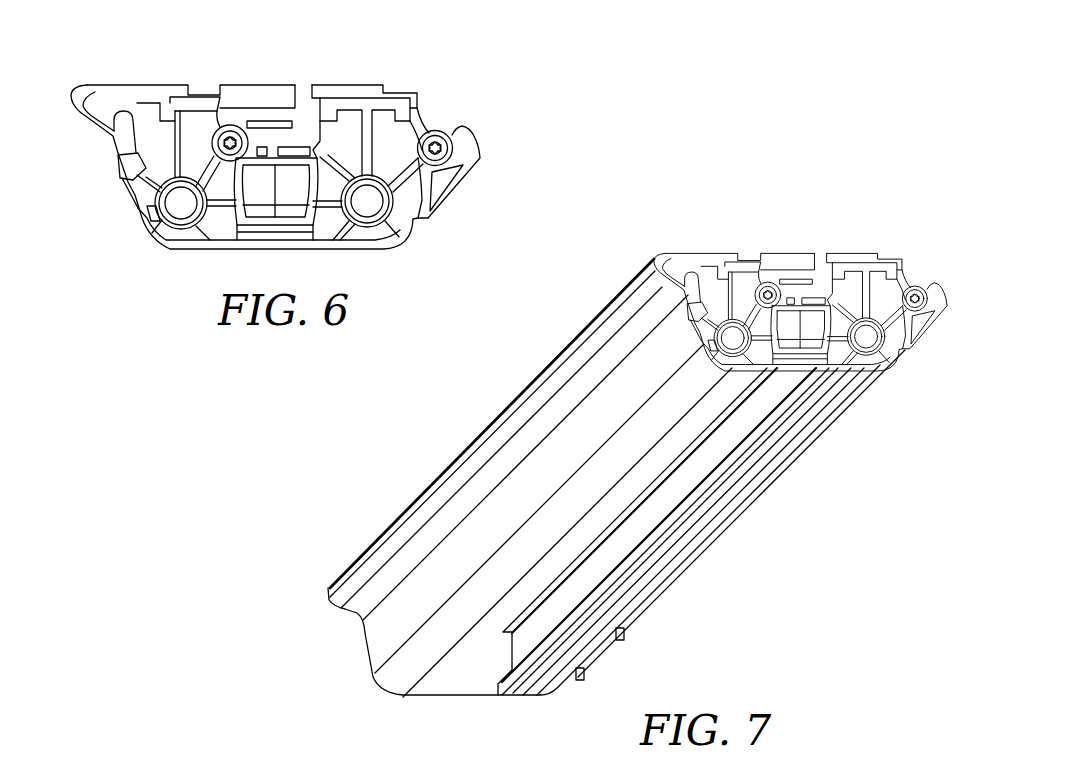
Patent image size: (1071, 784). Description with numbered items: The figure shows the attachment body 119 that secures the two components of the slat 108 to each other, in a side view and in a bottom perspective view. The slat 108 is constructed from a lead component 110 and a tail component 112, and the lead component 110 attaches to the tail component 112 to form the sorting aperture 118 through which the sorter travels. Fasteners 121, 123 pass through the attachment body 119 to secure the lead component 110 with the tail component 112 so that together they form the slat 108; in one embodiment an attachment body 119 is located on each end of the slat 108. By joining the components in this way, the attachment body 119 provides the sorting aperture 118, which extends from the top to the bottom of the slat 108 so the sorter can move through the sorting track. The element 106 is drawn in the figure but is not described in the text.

In FIG. 7, the end bracket top rail 106 is at (791, 260).
In FIG. 6, the slat 108 is at (403, 228).
In FIG. 7, the lead component 110 is at (782, 460).
In FIG. 7, the tail component 112 is at (475, 547).
In FIG. 6, the sorting aperture 118 is at (304, 107).
In FIG. 7, the sorting aperture 118 is at (600, 560).
In FIG. 6, the attachment body 119 is at (163, 166).
In FIG. 6, the fastener 121 is at (440, 133).
In FIG. 6, the fastener 123 is at (216, 127).